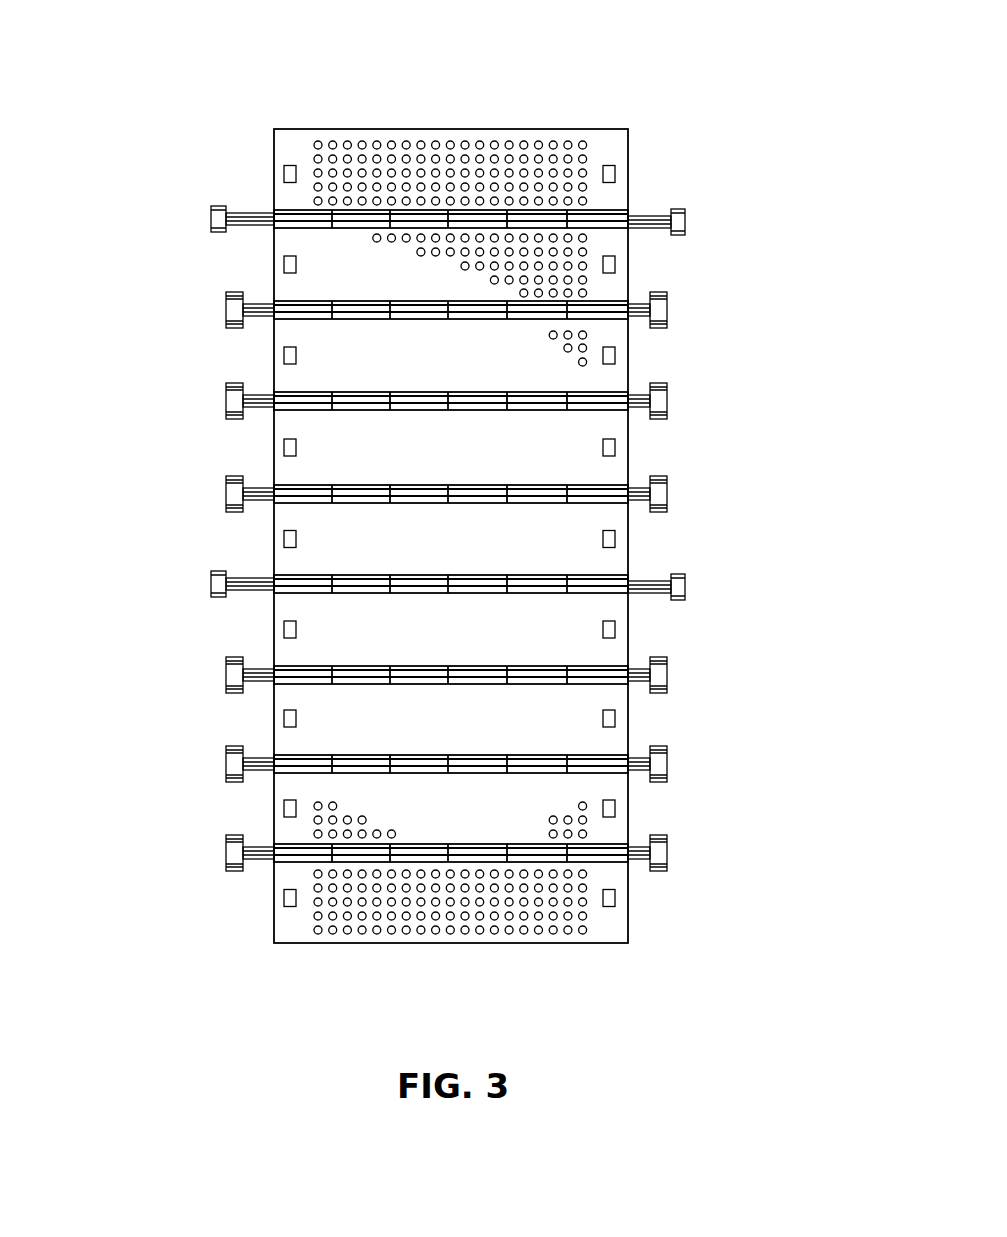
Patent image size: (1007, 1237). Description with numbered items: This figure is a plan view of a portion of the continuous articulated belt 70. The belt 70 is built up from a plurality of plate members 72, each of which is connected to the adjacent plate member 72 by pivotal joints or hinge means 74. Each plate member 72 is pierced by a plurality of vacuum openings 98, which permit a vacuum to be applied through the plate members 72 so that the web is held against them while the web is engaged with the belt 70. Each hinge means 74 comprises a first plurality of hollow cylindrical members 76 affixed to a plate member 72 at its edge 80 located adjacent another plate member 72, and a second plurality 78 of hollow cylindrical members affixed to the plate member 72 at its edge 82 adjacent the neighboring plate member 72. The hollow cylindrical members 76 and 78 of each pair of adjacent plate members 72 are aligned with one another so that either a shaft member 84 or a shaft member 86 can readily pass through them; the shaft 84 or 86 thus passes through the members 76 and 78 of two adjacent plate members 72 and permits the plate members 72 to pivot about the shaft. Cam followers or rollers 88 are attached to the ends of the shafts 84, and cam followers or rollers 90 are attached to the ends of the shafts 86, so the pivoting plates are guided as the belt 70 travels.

The continuous articulated belt 70 is at (645, 186).
The plate member 72 is at (310, 137).
The hinge means 74 is at (352, 220).
The first plurality of hollow cylindrical members 76 is at (540, 583).
The second plurality of hollow cylindrical members 78 is at (474, 672).
The edge of plate member 80 is at (451, 580).
The edge of plate member 82 is at (451, 556).
The shaft member 84 is at (633, 852).
The shaft member 86 is at (240, 577).
The cam followers or rollers 88 is at (226, 836).
The cam followers or rollers 90 is at (210, 582).
The vacuum openings 98 is at (567, 143).